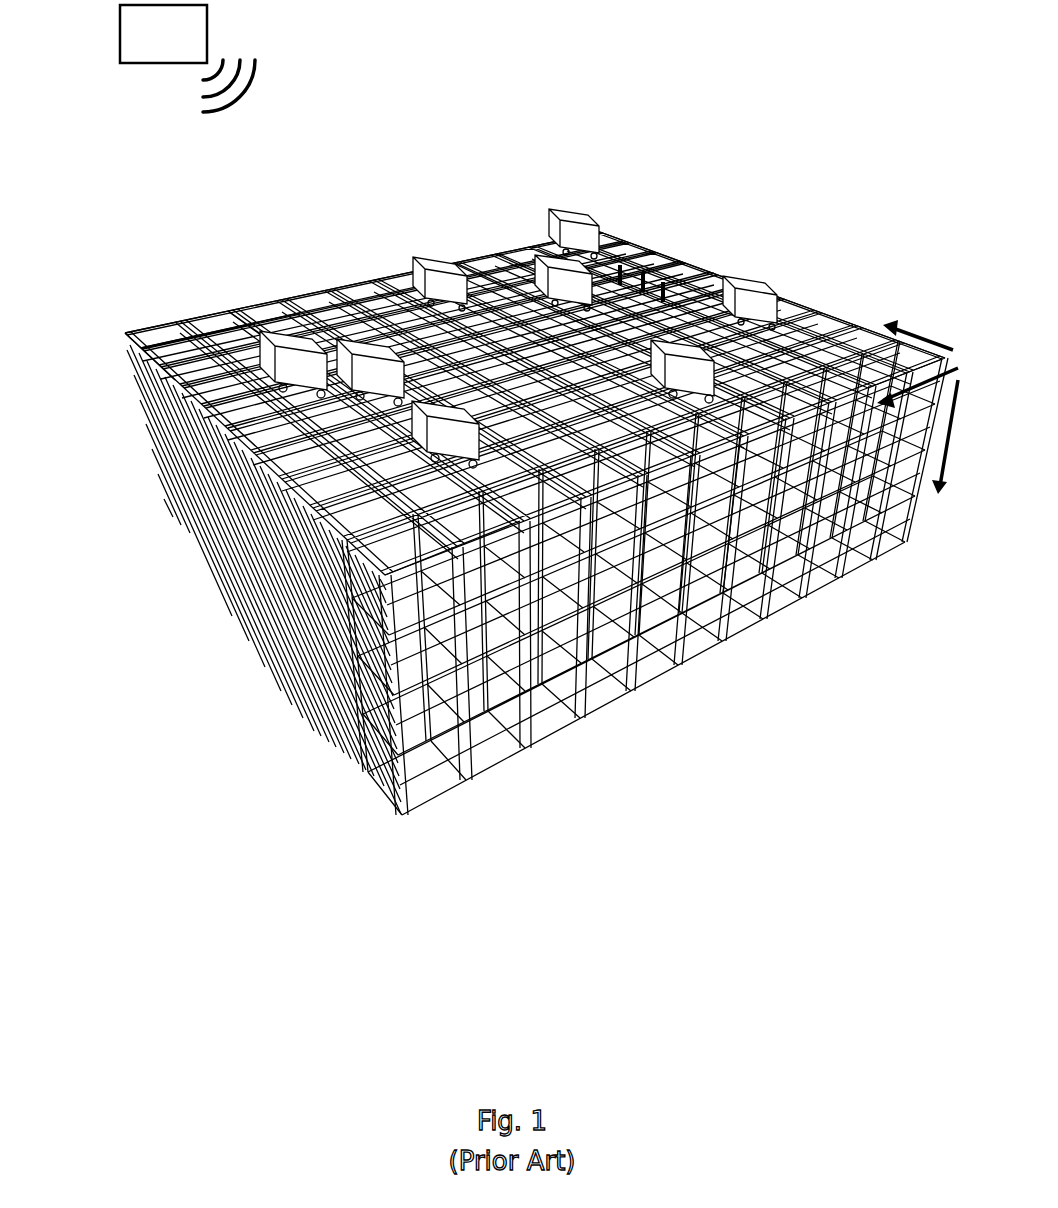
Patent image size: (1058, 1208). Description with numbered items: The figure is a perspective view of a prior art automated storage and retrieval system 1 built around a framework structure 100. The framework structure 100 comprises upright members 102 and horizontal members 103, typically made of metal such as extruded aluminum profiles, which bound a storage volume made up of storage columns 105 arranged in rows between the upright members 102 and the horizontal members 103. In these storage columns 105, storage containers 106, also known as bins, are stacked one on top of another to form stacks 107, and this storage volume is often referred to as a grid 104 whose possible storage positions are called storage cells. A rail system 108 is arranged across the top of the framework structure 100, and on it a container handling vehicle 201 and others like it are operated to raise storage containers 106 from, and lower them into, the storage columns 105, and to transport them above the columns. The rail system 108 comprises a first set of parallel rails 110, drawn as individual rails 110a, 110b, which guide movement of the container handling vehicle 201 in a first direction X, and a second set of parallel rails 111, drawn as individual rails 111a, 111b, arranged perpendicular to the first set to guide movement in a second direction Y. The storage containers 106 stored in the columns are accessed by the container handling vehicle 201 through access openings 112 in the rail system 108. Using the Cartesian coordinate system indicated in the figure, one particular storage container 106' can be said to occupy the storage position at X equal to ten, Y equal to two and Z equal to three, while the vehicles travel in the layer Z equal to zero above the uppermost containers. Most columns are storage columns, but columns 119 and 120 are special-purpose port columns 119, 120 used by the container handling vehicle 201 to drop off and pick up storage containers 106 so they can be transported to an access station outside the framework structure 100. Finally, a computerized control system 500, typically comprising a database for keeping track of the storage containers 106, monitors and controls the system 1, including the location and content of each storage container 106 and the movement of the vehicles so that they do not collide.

The automated storage and retrieval system 1 is at (476, 126).
The framework structure 100 is at (143, 490).
The upright members 102 is at (390, 697).
The horizontal members 103 is at (740, 543).
The grid 104 is at (112, 348).
The storage columns 105 is at (303, 598).
The storage containers 106 is at (646, 643).
The storage container 106' is at (504, 669).
The stacks 107 is at (822, 580).
The rail system 108 is at (873, 330).
The first set of parallel rails 110 is at (818, 352).
The first rail 110a is at (273, 313).
The second rail 110b is at (278, 314).
The second set of parallel rails 111 is at (383, 280).
The first rail 111a is at (240, 316).
The second rail 111b is at (287, 310).
The access openings 112 is at (776, 332).
The port column 119 is at (473, 540).
The port column 120 is at (653, 460).
The container handling vehicle 201 is at (590, 214).
The control system 500 is at (187, 58).